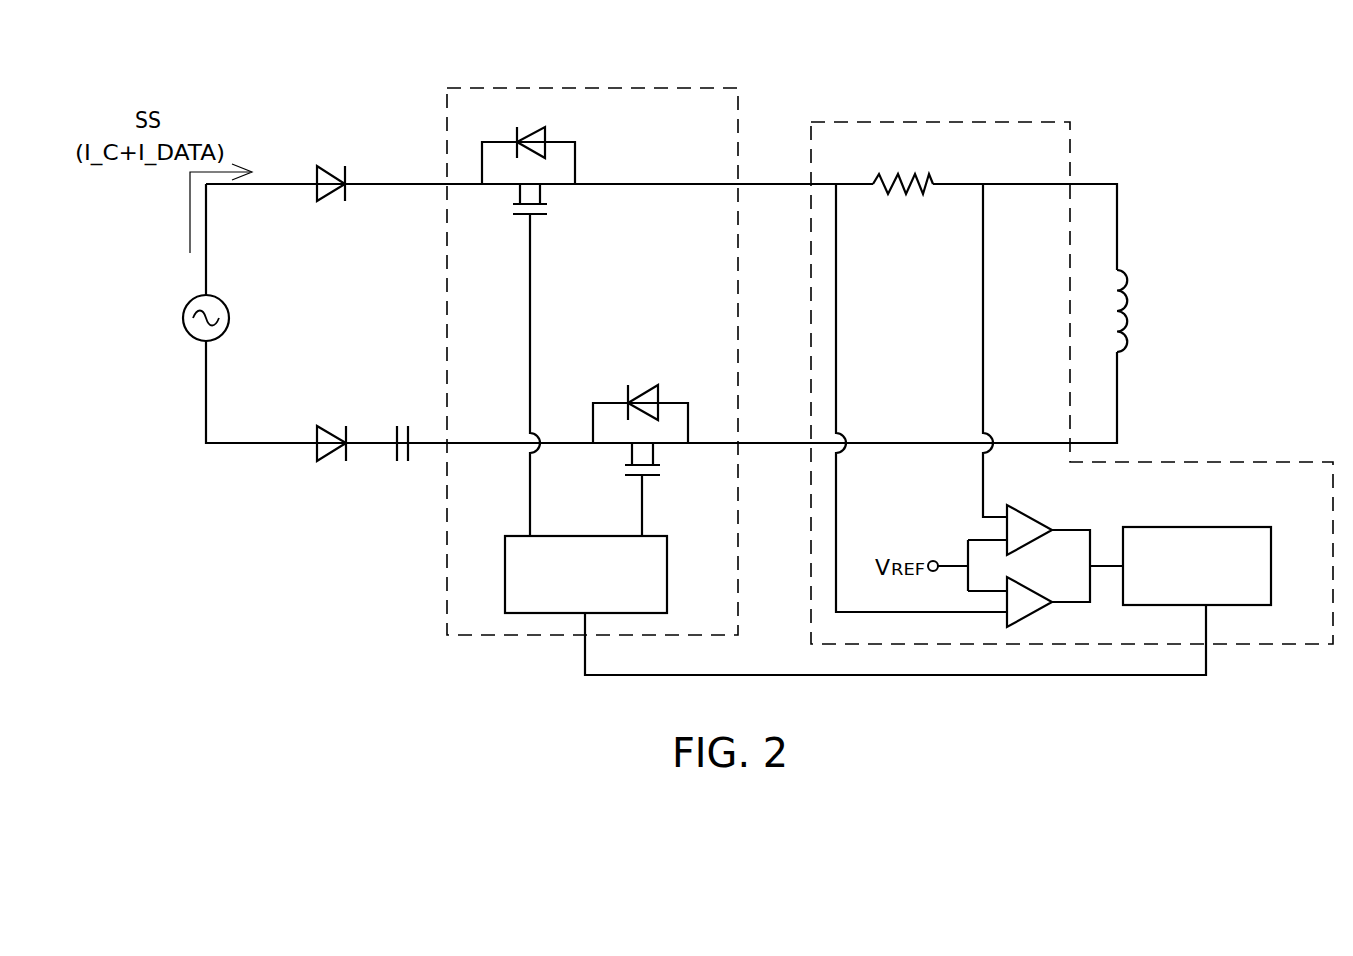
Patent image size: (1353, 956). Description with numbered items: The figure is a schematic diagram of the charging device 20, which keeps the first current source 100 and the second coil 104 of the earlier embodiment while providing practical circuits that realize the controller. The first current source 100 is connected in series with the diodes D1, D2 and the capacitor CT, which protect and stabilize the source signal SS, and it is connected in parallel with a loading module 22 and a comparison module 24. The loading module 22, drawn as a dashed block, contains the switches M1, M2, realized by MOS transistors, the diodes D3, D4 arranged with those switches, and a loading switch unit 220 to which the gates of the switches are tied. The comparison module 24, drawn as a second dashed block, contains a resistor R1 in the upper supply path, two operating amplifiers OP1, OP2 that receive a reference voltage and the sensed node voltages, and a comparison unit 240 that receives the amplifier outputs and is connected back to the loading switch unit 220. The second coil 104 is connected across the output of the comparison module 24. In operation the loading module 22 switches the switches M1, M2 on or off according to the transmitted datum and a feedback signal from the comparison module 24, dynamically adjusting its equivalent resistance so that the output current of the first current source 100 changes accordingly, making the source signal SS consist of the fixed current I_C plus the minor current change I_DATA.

The charging device 20 is at (1156, 97).
The loading module 22 is at (700, 88).
The comparison module 24 is at (1037, 122).
The first current source 100 is at (192, 302).
The second coil 104 is at (1134, 294).
The loading switch unit 220 is at (667, 586).
The comparison unit 240 is at (1240, 527).
The diode D1 is at (331, 162).
The diode D2 is at (330, 470).
The diode D3 is at (557, 134).
The diode D4 is at (669, 393).
The switch M1 is at (541, 221).
The switch M2 is at (653, 482).
The capacitor CT is at (403, 458).
The resistor R1 is at (903, 168).
The operating amplifier OP1 is at (1030, 513).
The operating amplifier OP2 is at (1030, 620).